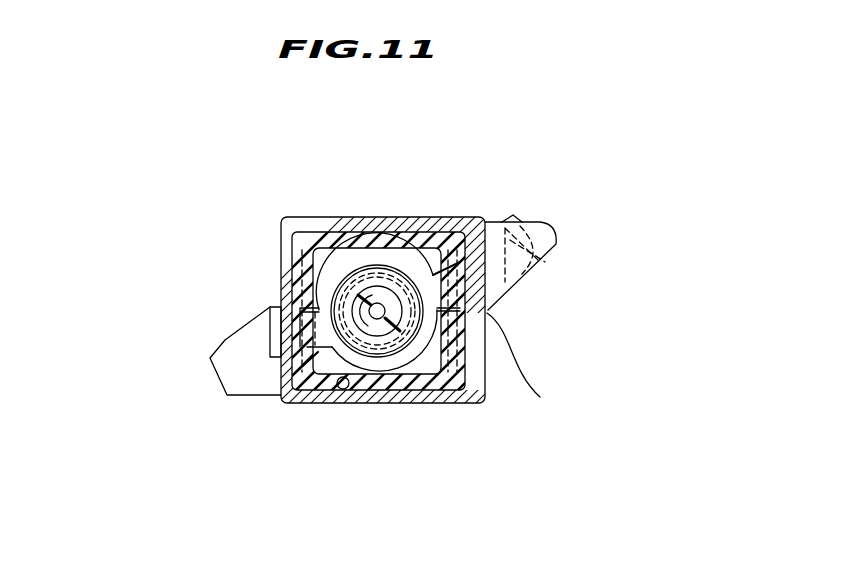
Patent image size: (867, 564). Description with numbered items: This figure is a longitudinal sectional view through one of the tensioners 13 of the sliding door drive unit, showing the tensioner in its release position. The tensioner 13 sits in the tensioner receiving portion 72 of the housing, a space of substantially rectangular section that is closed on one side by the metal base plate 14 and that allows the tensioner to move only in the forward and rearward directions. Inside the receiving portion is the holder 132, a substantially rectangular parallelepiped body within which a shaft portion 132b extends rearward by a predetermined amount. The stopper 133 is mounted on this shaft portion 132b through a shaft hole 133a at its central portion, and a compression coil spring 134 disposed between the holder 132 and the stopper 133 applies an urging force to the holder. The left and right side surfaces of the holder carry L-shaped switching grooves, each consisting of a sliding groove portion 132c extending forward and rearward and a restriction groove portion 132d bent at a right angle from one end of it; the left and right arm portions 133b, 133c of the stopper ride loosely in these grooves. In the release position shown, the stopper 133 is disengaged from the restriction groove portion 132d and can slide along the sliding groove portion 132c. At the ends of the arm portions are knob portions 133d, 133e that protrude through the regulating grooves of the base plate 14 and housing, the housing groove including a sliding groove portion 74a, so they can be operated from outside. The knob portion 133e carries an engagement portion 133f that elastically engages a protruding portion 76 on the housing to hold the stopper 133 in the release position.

The tensioner 13 is at (268, 252).
The base plate 14 is at (282, 220).
The tensioner receiving portion 72 is at (341, 389).
The sliding groove portion 74a is at (470, 367).
The protruding portion 76 is at (545, 262).
The holder 132 is at (338, 214).
The shaft portion 132b is at (375, 283).
The sliding groove portion 132c is at (463, 238).
The restriction groove portion 132d is at (285, 273).
The stopper 133 is at (572, 229).
The shaft hole 133a is at (370, 297).
The arm portion 133b is at (296, 302).
The arm portion 133c is at (416, 257).
The knob portion 133d is at (225, 333).
The knob portion 133e is at (545, 262).
The engagement portion 133f is at (493, 238).
The compression coil spring 134 is at (427, 252).